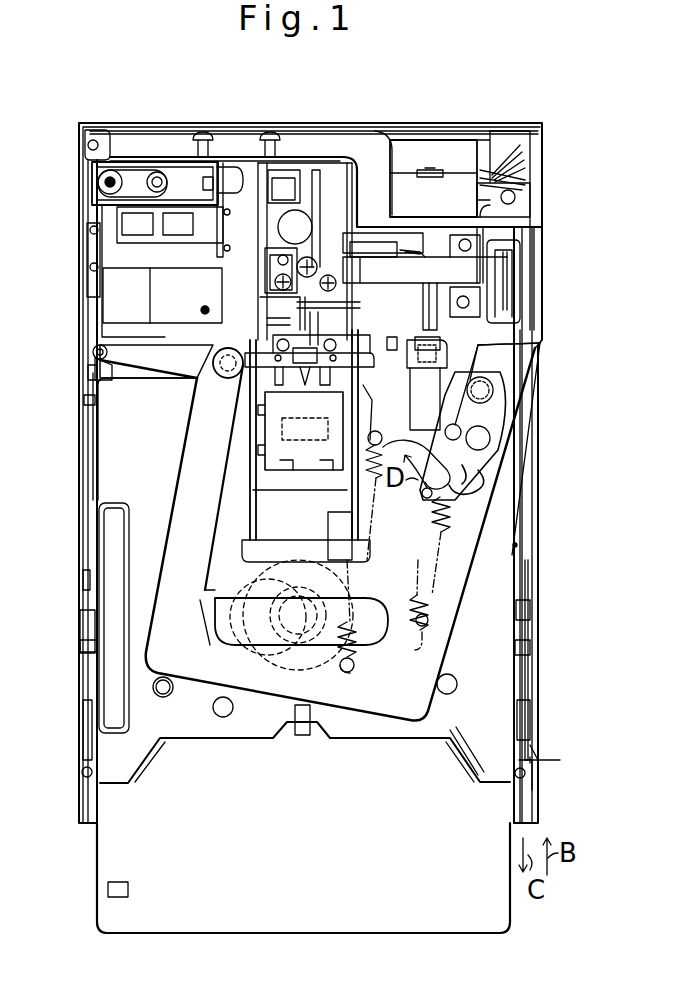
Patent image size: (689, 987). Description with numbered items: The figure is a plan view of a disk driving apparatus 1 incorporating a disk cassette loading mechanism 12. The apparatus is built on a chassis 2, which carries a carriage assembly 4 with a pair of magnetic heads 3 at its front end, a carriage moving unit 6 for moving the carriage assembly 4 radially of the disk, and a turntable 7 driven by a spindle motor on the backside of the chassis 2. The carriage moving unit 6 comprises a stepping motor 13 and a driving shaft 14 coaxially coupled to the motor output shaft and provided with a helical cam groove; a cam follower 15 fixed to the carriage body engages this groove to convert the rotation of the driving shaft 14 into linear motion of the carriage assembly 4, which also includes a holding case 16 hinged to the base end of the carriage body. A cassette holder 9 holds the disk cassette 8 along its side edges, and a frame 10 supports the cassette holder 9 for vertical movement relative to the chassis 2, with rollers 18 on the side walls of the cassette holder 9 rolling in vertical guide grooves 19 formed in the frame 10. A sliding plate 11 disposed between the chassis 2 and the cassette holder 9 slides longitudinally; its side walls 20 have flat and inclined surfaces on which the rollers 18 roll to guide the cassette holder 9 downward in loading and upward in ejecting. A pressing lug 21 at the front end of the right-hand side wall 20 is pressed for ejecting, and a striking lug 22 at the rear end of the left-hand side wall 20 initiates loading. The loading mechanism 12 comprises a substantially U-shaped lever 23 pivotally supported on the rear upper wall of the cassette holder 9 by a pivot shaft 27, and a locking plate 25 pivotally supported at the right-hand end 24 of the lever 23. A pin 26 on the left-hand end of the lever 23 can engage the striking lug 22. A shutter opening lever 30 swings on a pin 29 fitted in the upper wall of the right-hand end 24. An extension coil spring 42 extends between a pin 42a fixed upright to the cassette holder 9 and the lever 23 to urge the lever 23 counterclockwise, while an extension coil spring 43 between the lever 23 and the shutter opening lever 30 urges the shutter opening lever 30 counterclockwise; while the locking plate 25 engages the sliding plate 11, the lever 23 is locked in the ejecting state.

The disk driving apparatus 1 is at (552, 246).
The chassis 2 is at (375, 128).
The magnetic head 3 is at (300, 440).
The carriage assembly 4 is at (268, 322).
The carriage moving unit 6 is at (490, 185).
The turntable 7 is at (243, 607).
The disk cassette 8 is at (512, 912).
The cassette holder 9 is at (135, 694).
The frame 10 is at (520, 524).
The sliding plate 11 is at (517, 675).
The disk cassette loading mechanism 12 is at (517, 545).
The stepping motor 13 is at (427, 150).
The driving shaft 14 is at (427, 295).
The cam follower 15 is at (453, 253).
The holding case 16 is at (350, 343).
The front rollers 18 is at (84, 400).
The vertical guide grooves 19 is at (88, 655).
The side walls 20 is at (87, 375).
The pressing lug 21 is at (549, 757).
The striking lug 22 is at (96, 357).
The lever 23 is at (193, 478).
The right-hand end 24 is at (515, 388).
The locking plate 25 is at (462, 415).
The pin 26 is at (96, 348).
The pivot shaft 27 is at (232, 378).
The pin 29 is at (493, 380).
The shutter opening lever 30 is at (460, 470).
The extension coil spring 42 is at (408, 455).
The pin 42a is at (378, 434).
The extension coil spring 43 is at (410, 610).